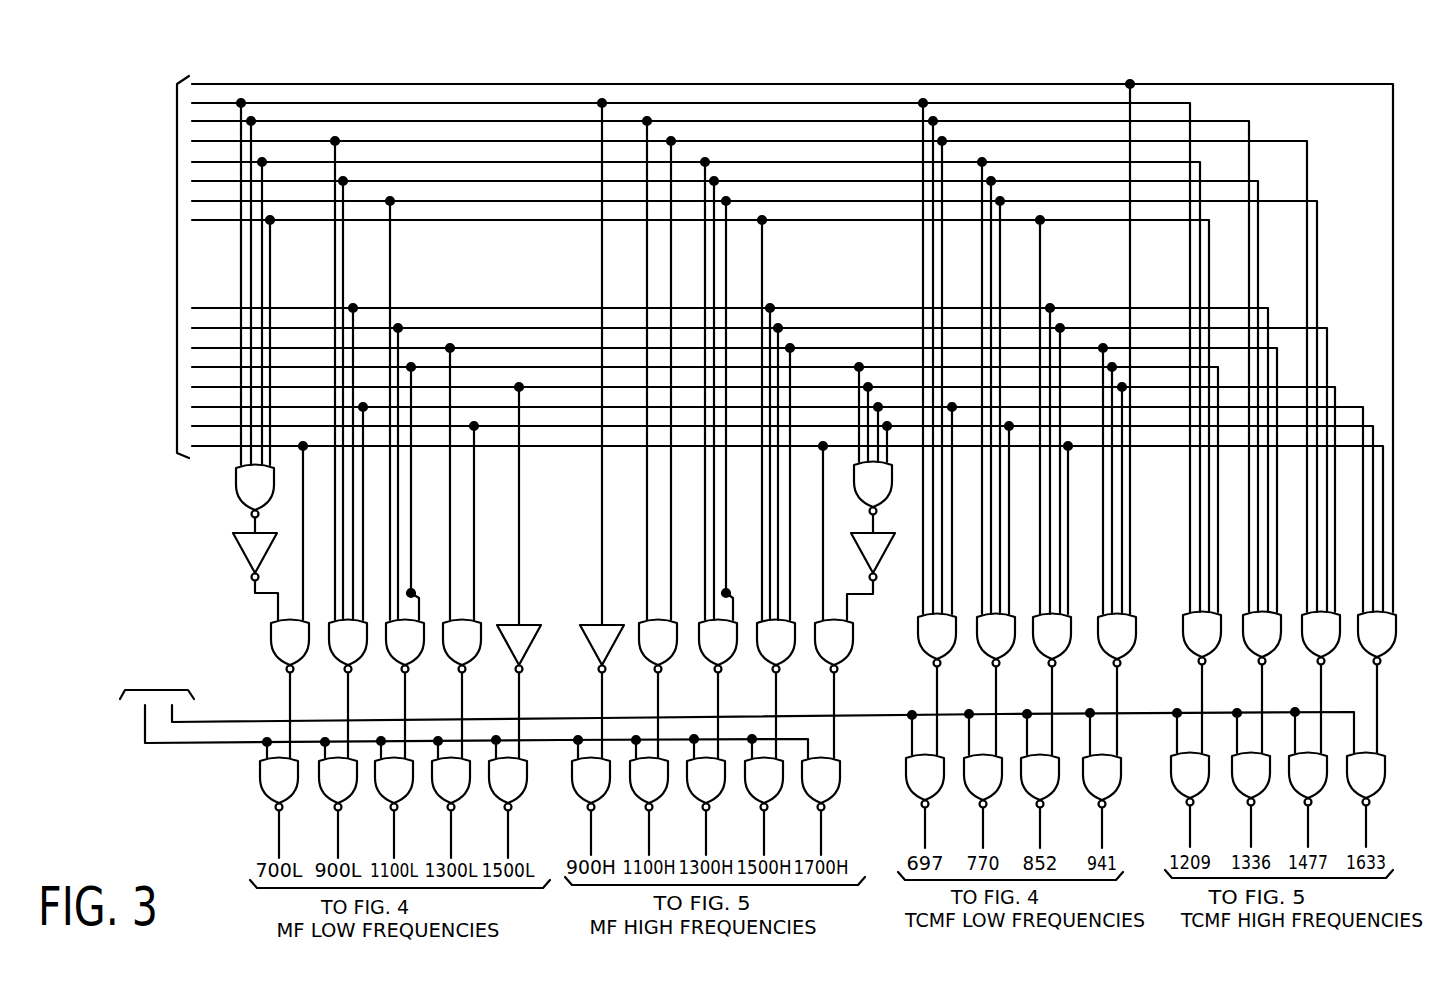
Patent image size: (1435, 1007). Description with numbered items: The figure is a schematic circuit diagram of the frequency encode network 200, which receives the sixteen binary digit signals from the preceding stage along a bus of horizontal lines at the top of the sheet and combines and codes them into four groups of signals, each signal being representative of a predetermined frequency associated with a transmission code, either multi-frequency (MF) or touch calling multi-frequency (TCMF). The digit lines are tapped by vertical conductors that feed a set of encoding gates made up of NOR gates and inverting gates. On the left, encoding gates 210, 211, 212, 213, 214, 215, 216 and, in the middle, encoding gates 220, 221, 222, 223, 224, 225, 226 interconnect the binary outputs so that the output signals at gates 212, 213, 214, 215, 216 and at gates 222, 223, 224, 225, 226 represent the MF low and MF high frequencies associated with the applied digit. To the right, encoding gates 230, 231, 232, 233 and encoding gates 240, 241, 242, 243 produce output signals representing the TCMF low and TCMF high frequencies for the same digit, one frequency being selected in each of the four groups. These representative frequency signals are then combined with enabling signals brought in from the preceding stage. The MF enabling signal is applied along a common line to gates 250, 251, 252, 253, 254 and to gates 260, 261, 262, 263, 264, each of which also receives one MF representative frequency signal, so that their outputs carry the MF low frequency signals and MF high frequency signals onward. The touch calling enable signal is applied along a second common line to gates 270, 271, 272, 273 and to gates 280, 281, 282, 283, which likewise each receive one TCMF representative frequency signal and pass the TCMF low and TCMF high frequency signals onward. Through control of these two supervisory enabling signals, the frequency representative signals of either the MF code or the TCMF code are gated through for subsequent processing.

The frequency encode network 200 is at (88, 858).
The encoding gate 210 is at (267, 489).
The encoding gate 211 is at (267, 556).
The encoding gate 212 is at (275, 657).
The encoding gate 213 is at (333, 657).
The encoding gate 214 is at (390, 657).
The encoding gate 215 is at (447, 657).
The encoding gate 216 is at (512, 655).
The encoding gate 220 is at (886, 489).
The encoding gate 221 is at (884, 556).
The encoding gate 222 is at (595, 655).
The encoding gate 223 is at (643, 657).
The encoding gate 224 is at (703, 657).
The encoding gate 225 is at (761, 657).
The encoding gate 226 is at (819, 657).
The encoding gate 230 is at (922, 650).
The encoding gate 231 is at (981, 650).
The encoding gate 232 is at (1037, 650).
The encoding gate 233 is at (1102, 650).
The encoding gate 240 is at (1187, 649).
The encoding gate 241 is at (1247, 649).
The encoding gate 242 is at (1306, 649).
The encoding gate 243 is at (1362, 649).
The MF enable gate 250 is at (264, 795).
The MF enable gate 251 is at (323, 795).
The MF enable gate 252 is at (379, 795).
The MF enable gate 253 is at (436, 795).
The MF enable gate 254 is at (493, 795).
The MF enable gate 260 is at (576, 795).
The MF enable gate 261 is at (634, 795).
The MF enable gate 262 is at (691, 795).
The MF enable gate 263 is at (749, 795).
The MF enable gate 264 is at (806, 795).
The TCMF enable gate 270 is at (910, 792).
The TCMF enable gate 271 is at (968, 792).
The TCMF enable gate 272 is at (1025, 792).
The TCMF enable gate 273 is at (1087, 792).
The TCMF enable gate 280 is at (1175, 790).
The TCMF enable gate 281 is at (1236, 790).
The TCMF enable gate 282 is at (1293, 790).
The TCMF enable gate 283 is at (1351, 790).